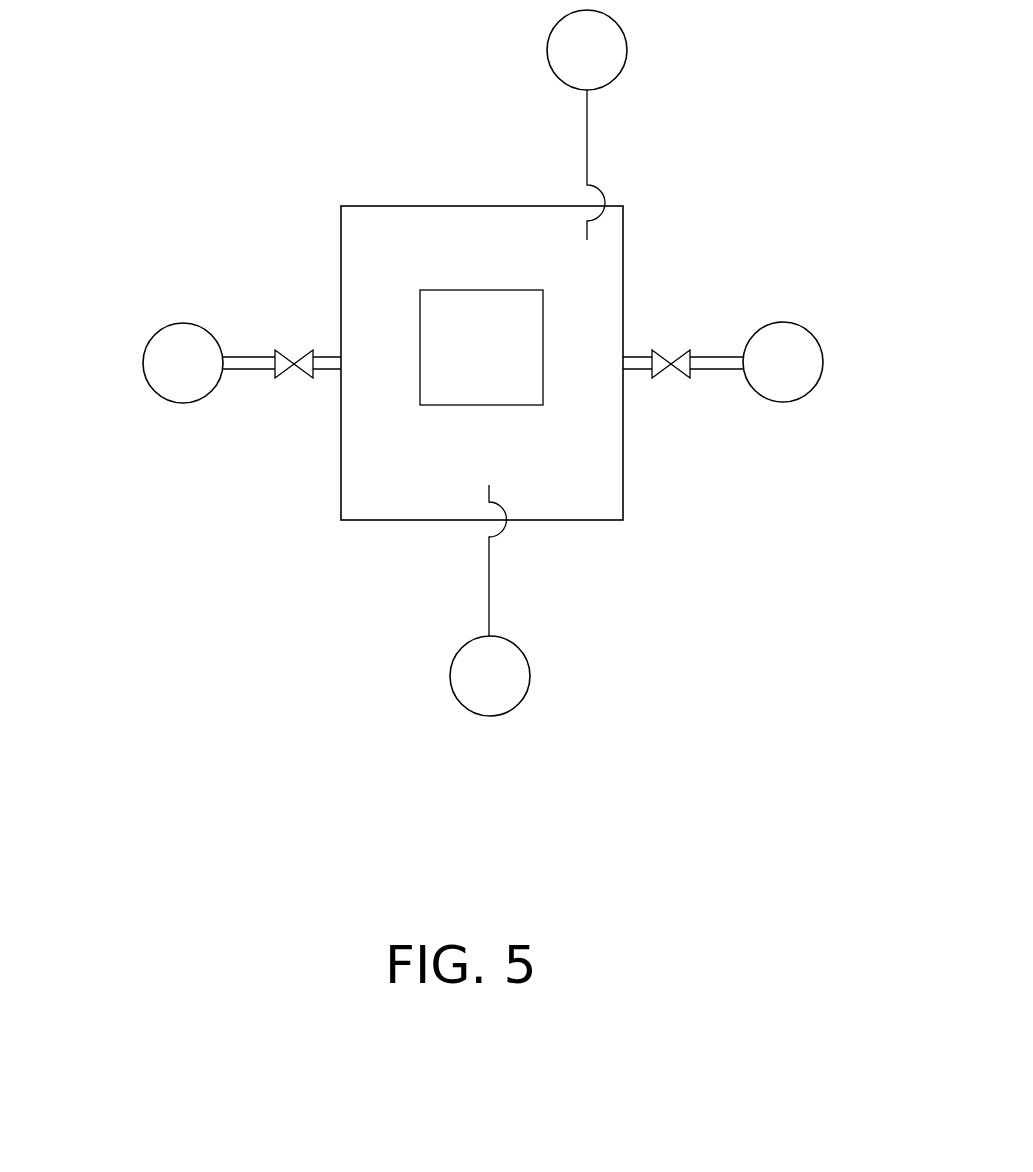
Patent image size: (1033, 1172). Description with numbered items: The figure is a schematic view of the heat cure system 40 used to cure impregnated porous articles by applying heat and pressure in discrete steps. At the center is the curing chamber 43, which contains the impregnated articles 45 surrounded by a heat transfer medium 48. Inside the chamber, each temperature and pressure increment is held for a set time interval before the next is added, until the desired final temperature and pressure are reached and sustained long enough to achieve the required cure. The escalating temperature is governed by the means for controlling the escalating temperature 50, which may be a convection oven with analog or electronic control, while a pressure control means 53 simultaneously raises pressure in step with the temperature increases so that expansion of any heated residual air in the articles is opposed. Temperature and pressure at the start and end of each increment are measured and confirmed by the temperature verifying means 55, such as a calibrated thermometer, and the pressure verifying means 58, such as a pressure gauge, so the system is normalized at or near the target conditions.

The heat cure system 40 is at (226, 96).
The curing chamber 43 is at (388, 205).
The impregnated articles 45 is at (498, 356).
The heat transfer medium 48 is at (398, 271).
The means for controlling the escalating temperature 50 is at (519, 705).
The pressure control means 53 is at (143, 360).
The temperature verifying means 55 is at (627, 47).
The pressure verifying means 58 is at (823, 358).